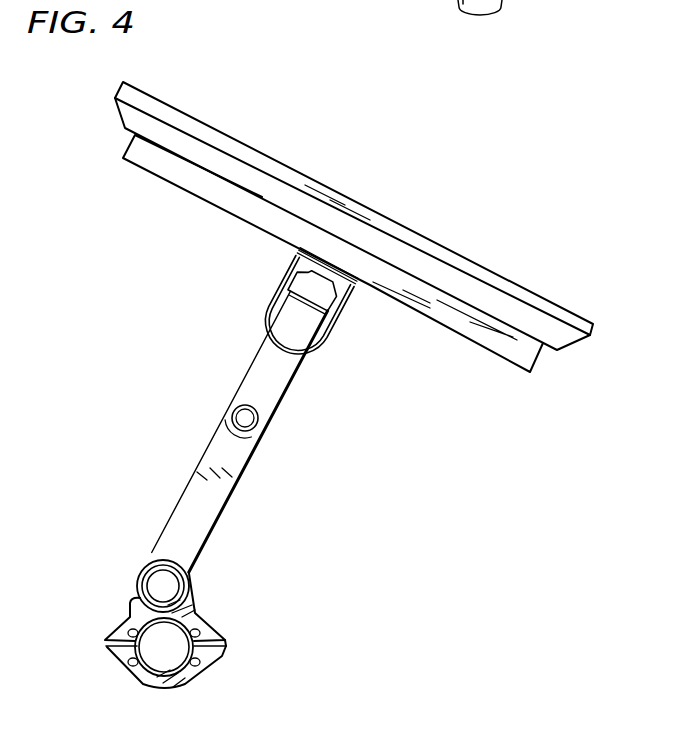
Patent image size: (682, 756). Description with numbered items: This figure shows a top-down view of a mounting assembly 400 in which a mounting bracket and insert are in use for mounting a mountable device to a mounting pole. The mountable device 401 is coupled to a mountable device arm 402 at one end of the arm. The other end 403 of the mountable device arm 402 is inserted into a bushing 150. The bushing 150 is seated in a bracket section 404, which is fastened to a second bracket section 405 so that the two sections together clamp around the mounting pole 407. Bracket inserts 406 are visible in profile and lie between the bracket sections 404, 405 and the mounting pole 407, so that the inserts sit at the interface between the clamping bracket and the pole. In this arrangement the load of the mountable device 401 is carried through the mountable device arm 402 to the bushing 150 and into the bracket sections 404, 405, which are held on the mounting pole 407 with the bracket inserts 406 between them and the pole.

The solar panel mounting assembly 400 is at (548, 187).
The mountable device 401 is at (487, 338).
The mountable device arm 402 is at (212, 498).
The other end of the mountable device arm 403 is at (186, 586).
The bushing 150 is at (157, 585).
The bracket section 404 is at (195, 610).
The bracket section 405 is at (192, 670).
The bracket inserts 406 is at (225, 642).
The mounting pole 407 is at (147, 652).